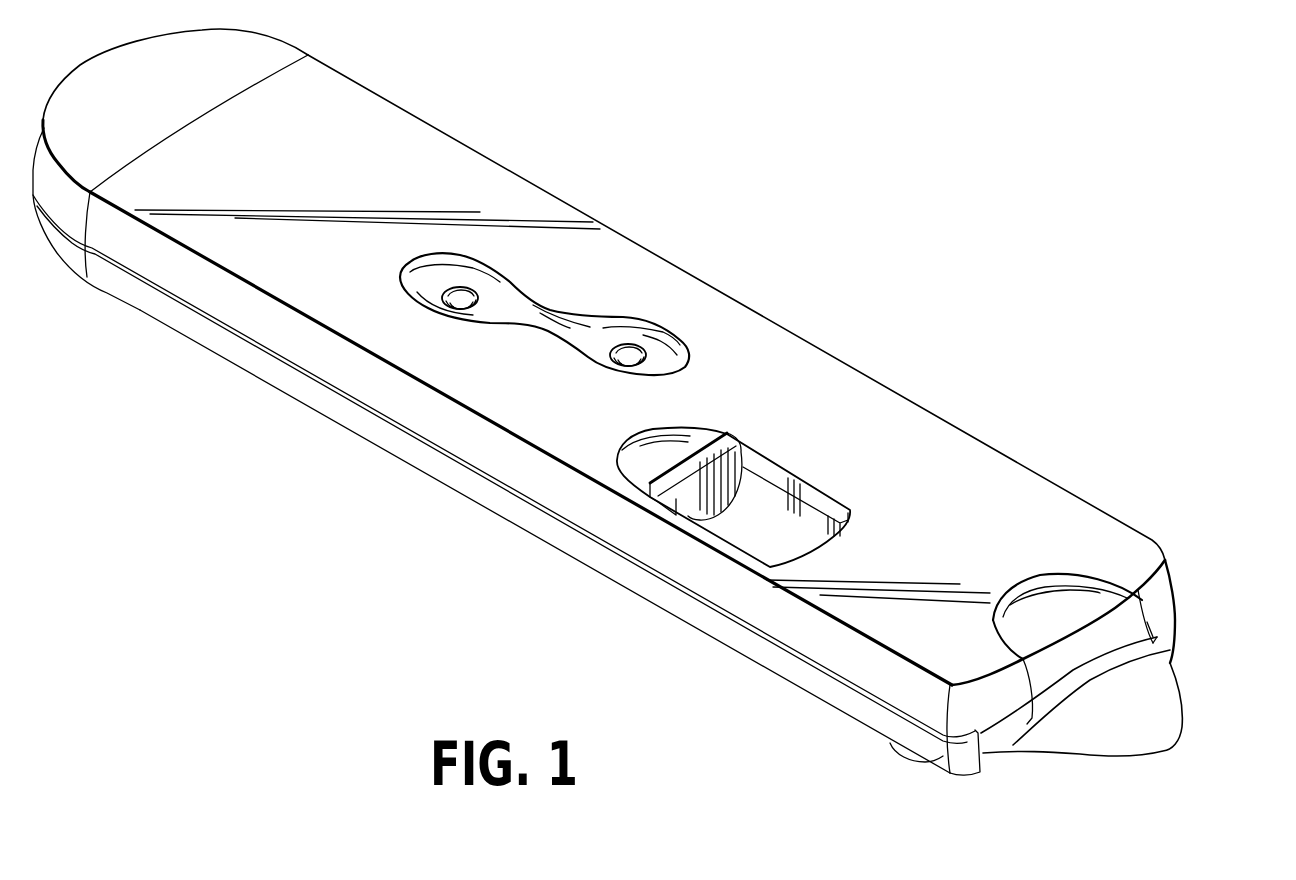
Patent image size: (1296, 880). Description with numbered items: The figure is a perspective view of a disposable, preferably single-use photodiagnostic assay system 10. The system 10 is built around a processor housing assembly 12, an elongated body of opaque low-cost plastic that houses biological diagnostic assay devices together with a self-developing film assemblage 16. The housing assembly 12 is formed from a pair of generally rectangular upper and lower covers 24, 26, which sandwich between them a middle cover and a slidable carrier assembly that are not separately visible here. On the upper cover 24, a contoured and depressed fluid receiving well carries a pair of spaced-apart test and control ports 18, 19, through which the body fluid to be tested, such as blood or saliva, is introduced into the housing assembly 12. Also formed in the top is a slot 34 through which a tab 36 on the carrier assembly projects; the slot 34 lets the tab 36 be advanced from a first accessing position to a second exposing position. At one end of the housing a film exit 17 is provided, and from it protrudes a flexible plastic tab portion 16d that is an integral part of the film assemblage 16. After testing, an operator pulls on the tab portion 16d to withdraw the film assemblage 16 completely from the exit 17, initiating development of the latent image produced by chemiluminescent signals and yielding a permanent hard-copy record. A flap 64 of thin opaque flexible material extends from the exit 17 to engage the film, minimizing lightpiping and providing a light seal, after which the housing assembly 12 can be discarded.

The photodiagnostic assay system 10 is at (870, 143).
The processor housing assembly 12 is at (383, 143).
The film assemblage 16 is at (1090, 753).
The tab portion 16d is at (1147, 707).
The film exit 17 is at (1160, 640).
The test port 18 is at (467, 292).
The control port 19 is at (637, 348).
The upper cover 24 is at (945, 448).
The lower cover 26 is at (830, 693).
The slot 34 is at (800, 493).
The tab 36 is at (730, 458).
The flap 64 is at (1168, 667).